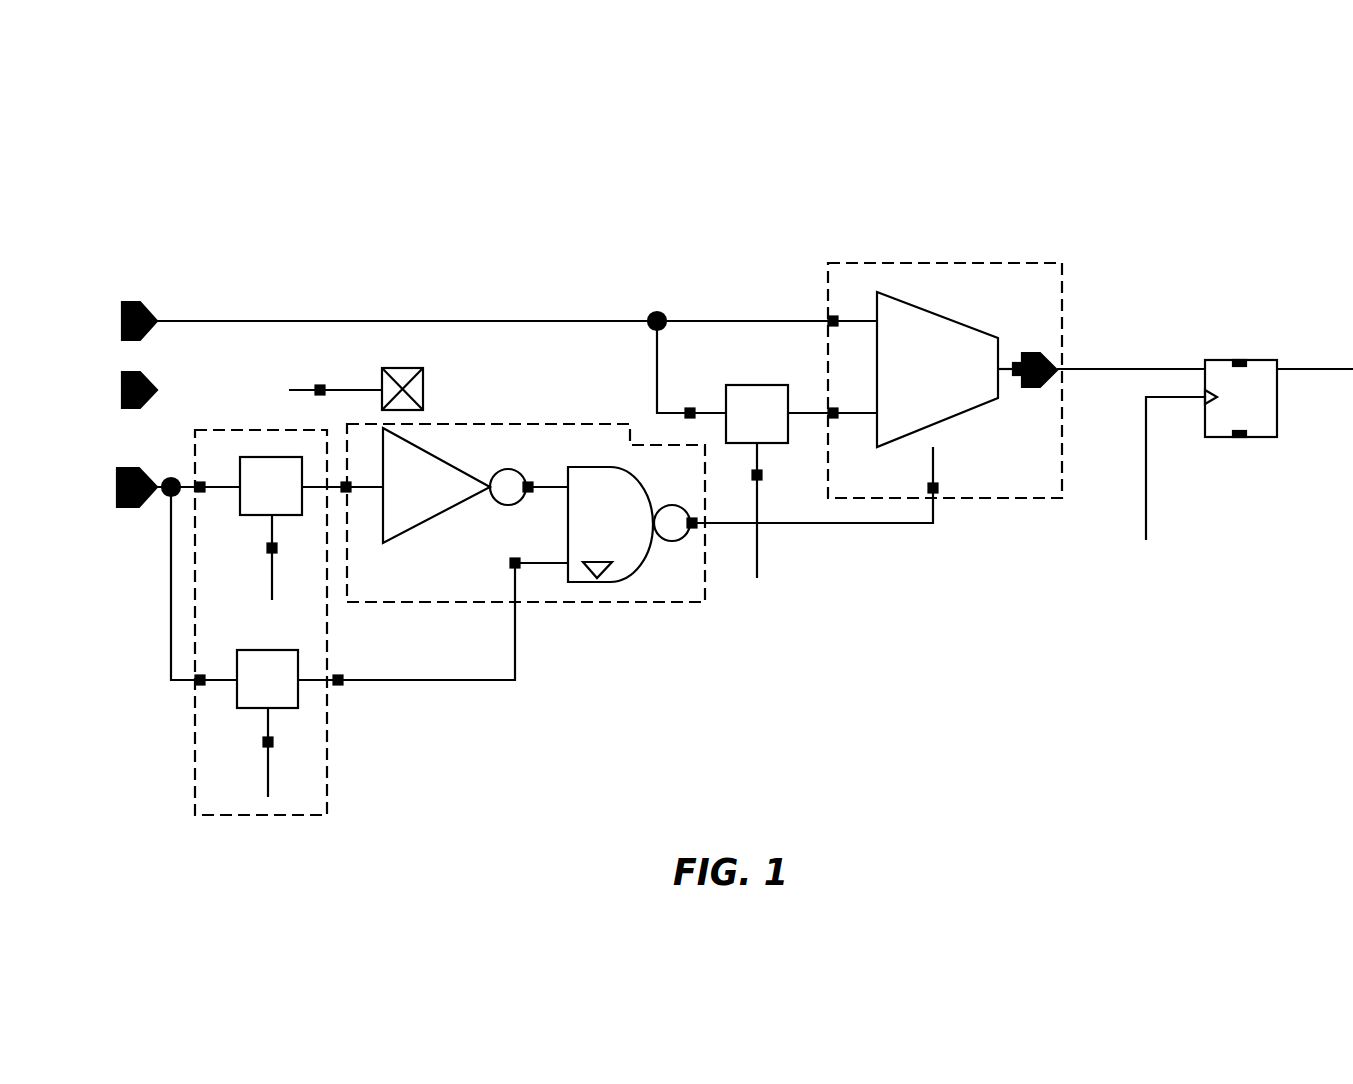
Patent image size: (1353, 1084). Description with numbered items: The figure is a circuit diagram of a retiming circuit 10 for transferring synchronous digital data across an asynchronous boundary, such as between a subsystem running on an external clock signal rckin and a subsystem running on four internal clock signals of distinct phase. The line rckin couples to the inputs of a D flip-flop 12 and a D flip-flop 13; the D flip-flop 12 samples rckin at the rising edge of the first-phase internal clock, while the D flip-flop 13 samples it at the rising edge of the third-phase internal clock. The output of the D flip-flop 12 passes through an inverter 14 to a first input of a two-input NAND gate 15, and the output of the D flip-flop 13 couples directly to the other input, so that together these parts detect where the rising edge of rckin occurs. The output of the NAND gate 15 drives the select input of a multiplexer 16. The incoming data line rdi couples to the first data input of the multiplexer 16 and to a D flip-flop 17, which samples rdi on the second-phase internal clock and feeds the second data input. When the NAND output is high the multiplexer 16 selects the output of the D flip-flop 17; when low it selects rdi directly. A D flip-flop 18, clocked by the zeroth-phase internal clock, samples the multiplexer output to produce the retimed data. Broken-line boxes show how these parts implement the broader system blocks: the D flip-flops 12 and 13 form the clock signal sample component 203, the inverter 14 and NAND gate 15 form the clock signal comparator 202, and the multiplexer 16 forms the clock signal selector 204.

The retiming circuit 10 is at (1150, 230).
The D flip-flop 12 is at (269, 528).
The D flip-flop 13 is at (279, 723).
The inverter 14 is at (475, 485).
The NAND gate 15 is at (632, 524).
The multiplexer 16 is at (937, 369).
The D flip-flop 17 is at (755, 482).
The D flip-flop 18 is at (1241, 399).
The clock signal comparator 202 is at (690, 603).
The clock signal sample component 203 is at (328, 757).
The clock signal selector 204 is at (974, 258).